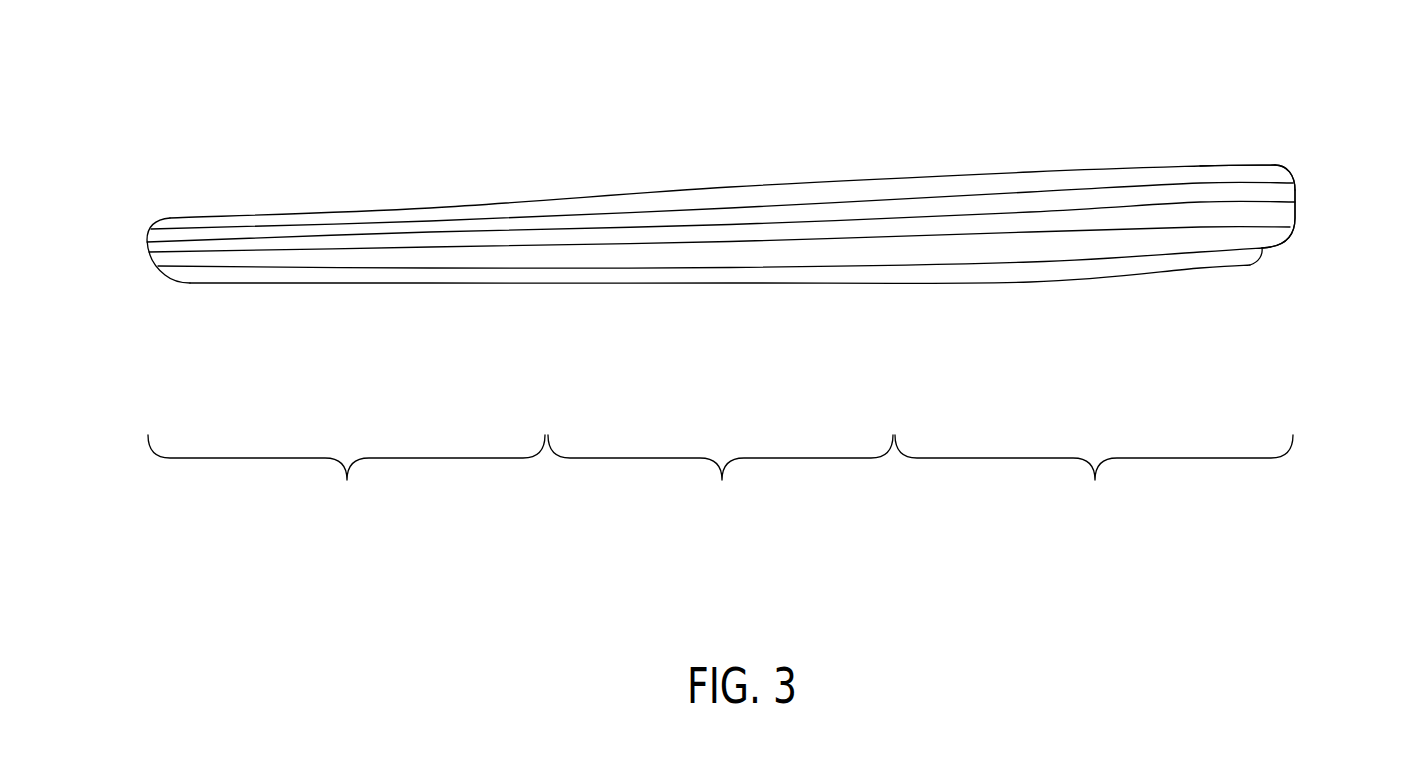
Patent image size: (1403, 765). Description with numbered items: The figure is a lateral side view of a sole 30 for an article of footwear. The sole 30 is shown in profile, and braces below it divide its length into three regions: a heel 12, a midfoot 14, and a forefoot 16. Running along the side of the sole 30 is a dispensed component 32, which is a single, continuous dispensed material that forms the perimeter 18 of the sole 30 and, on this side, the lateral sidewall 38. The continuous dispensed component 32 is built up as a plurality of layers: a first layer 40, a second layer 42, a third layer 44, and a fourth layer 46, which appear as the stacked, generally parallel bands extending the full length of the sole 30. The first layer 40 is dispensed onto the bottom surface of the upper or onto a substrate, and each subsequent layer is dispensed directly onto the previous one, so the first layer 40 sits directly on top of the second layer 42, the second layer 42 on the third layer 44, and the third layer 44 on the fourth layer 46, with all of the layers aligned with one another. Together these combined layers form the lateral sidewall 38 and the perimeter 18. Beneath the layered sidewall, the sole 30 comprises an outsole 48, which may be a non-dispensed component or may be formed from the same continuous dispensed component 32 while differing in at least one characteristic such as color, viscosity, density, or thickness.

The heel 12 is at (1094, 477).
The midfoot 14 is at (720, 477).
The forefoot 16 is at (346, 477).
The perimeter 18 is at (1295, 204).
The sole 30 is at (753, 199).
The dispensed component 32 is at (1222, 175).
The lateral sidewall 38 is at (688, 220).
The first layer 40 is at (323, 214).
The second layer 42 is at (363, 232).
The third layer 44 is at (420, 243).
The fourth layer 46 is at (500, 257).
The outsole 48 is at (658, 275).